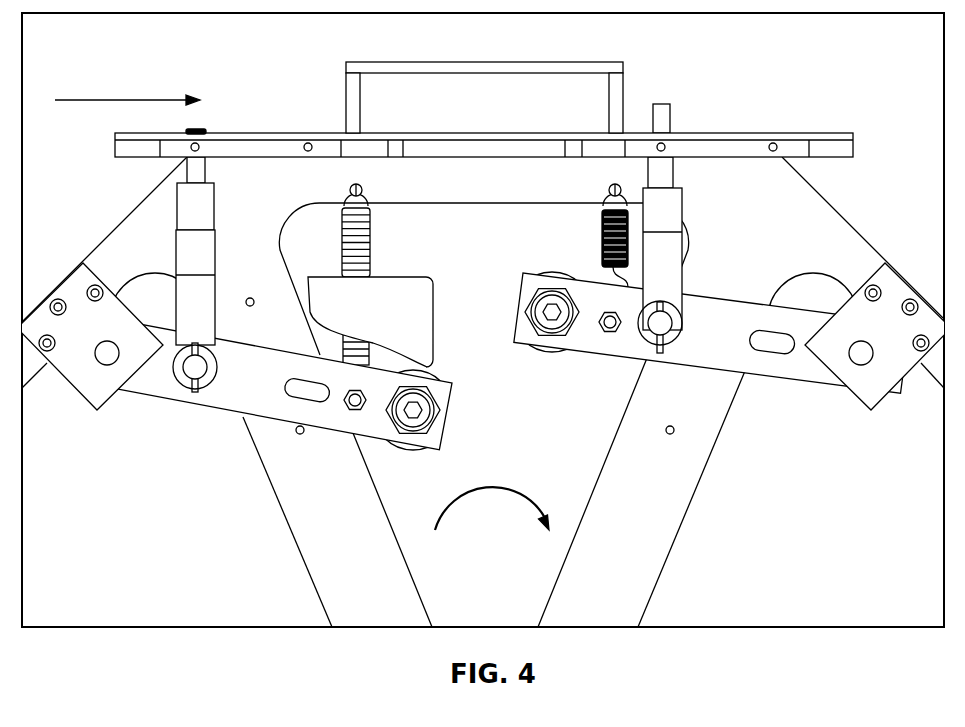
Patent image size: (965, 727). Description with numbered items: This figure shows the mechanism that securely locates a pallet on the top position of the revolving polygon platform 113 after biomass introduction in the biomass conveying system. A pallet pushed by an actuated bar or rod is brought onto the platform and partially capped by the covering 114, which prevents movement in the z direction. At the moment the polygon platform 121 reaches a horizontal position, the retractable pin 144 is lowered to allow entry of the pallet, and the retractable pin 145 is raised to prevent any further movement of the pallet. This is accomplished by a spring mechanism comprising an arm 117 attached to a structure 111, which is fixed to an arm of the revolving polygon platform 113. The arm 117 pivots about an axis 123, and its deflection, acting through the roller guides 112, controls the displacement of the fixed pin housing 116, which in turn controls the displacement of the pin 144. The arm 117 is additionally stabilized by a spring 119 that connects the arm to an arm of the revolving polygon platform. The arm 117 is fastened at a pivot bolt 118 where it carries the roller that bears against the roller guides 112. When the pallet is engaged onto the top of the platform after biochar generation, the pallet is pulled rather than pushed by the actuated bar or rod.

The structure 111 is at (78, 380).
The roller guides 112 is at (418, 320).
The revolving polygon platform 113 is at (677, 443).
The covering 114 is at (398, 62).
The fixed pin housing 116 is at (192, 253).
The arm 117 is at (233, 398).
The pivot bolt 118 is at (453, 417).
The spring 119 is at (600, 247).
The polygon platform 121 is at (297, 133).
The axis 123 is at (107, 362).
The retractable pin 144 is at (187, 132).
The retractable pin 145 is at (672, 118).